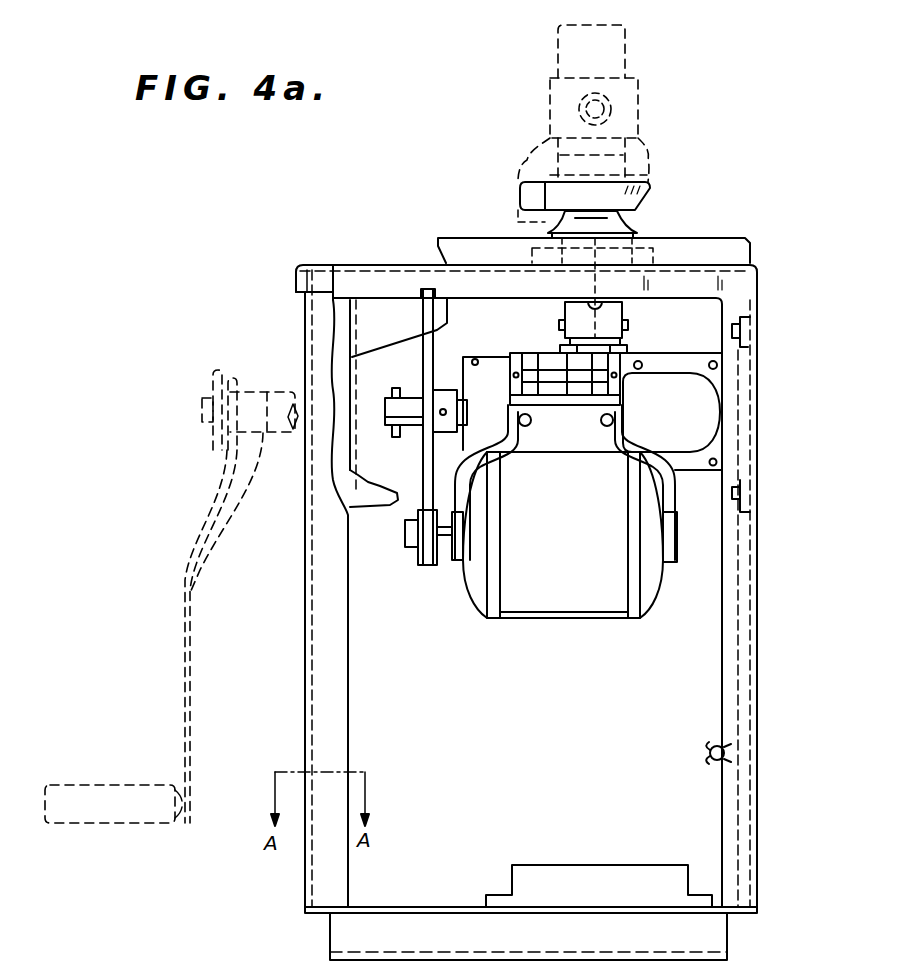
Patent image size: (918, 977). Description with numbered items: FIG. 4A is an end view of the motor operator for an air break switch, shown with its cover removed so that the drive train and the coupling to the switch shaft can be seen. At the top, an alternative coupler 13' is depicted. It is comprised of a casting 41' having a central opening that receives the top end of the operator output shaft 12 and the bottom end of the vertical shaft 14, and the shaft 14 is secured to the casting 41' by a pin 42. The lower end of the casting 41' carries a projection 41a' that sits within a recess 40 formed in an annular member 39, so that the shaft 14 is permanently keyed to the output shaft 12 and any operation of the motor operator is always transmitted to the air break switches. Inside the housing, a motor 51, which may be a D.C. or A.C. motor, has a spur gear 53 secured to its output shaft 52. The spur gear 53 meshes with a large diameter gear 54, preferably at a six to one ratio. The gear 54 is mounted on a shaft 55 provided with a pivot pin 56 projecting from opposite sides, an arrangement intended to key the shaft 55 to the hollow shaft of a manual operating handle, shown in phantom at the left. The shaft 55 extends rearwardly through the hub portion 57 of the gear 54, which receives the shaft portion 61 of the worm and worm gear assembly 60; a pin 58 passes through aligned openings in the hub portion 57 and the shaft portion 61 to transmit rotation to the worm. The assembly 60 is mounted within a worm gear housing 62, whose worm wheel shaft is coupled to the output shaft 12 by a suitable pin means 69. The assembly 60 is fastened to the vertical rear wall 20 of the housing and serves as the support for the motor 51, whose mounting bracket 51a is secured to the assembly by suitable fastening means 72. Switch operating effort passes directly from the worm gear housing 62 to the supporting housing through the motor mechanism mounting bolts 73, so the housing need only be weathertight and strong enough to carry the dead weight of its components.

The vertical shaft 14 is at (610, 63).
The alternative coupler 13' is at (637, 132).
The casting 41' is at (561, 108).
The pin 42 is at (603, 121).
The projection 41a' is at (546, 161).
The operator output shaft 12 is at (627, 182).
The recess 40 is at (518, 197).
The annular member 39 is at (638, 200).
The pin means 69 is at (595, 290).
The motor mechanism mounting bolts 73 is at (740, 318).
The worm and worm gear assembly 60 is at (725, 403).
The worm gear housing 62 is at (690, 425).
The vertical rear wall 20 is at (757, 565).
The fastening means 72 is at (601, 418).
The mounting bracket 51a is at (552, 430).
The motor 51 is at (578, 560).
The shaft portion 61 is at (465, 372).
The hub portion 57 is at (438, 390).
The shaft 55 is at (408, 397).
The pivot pin 56 is at (398, 433).
The pin 58 is at (445, 415).
The large diameter gear 54 is at (422, 457).
The output shaft 52 is at (407, 540).
The spur gear 53 is at (432, 563).